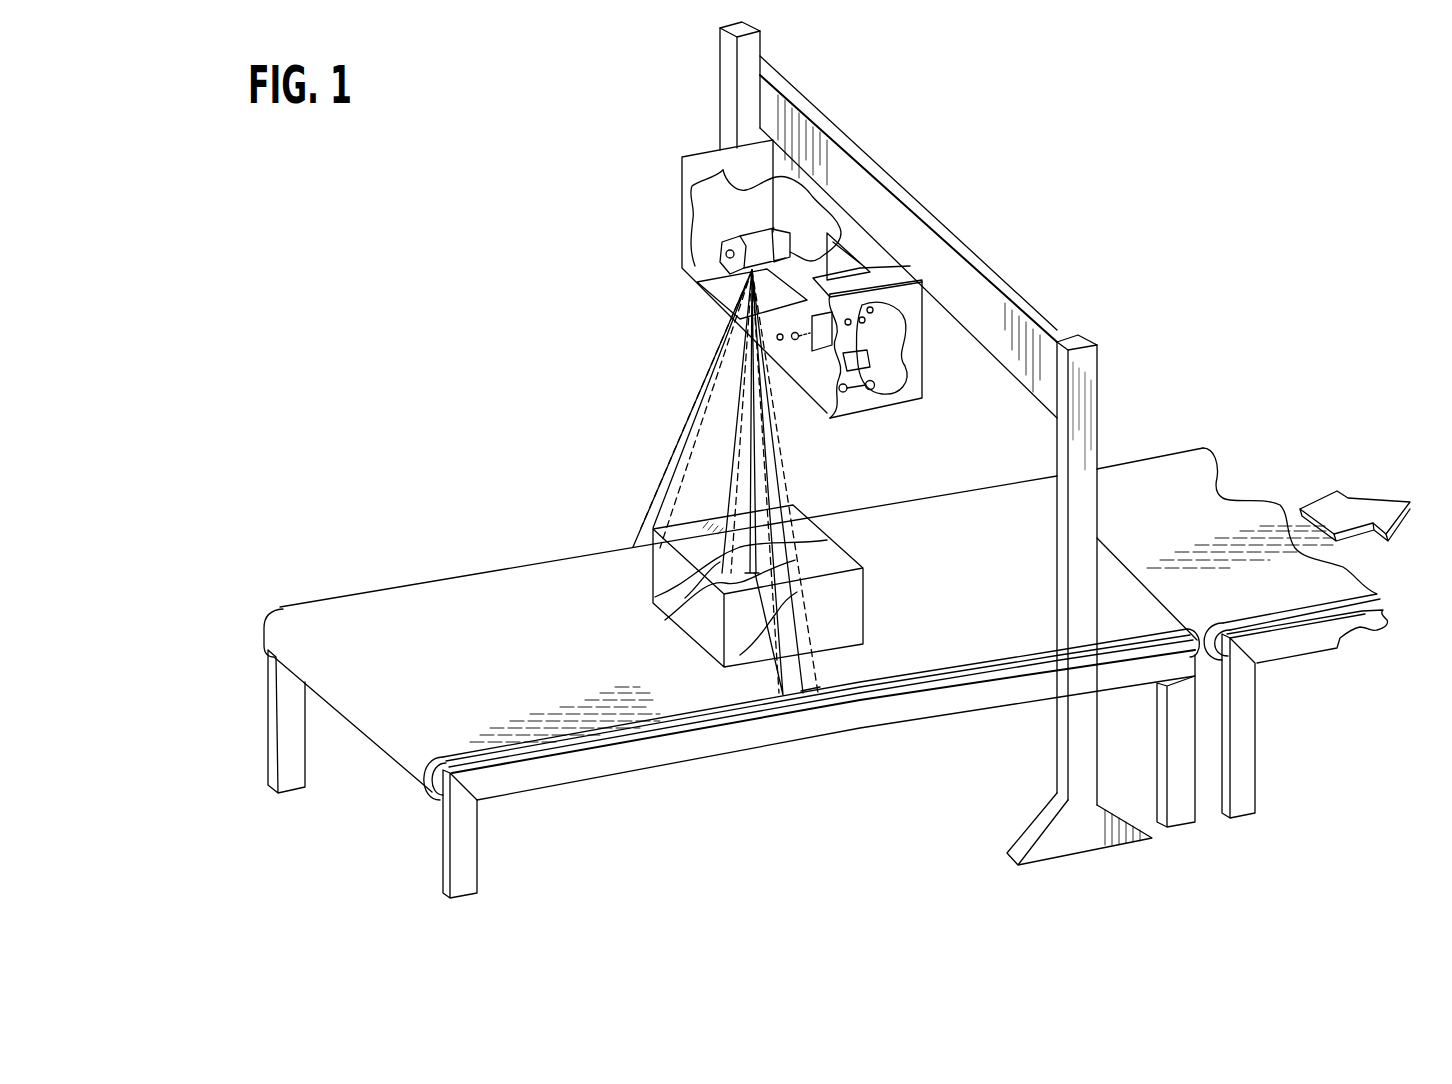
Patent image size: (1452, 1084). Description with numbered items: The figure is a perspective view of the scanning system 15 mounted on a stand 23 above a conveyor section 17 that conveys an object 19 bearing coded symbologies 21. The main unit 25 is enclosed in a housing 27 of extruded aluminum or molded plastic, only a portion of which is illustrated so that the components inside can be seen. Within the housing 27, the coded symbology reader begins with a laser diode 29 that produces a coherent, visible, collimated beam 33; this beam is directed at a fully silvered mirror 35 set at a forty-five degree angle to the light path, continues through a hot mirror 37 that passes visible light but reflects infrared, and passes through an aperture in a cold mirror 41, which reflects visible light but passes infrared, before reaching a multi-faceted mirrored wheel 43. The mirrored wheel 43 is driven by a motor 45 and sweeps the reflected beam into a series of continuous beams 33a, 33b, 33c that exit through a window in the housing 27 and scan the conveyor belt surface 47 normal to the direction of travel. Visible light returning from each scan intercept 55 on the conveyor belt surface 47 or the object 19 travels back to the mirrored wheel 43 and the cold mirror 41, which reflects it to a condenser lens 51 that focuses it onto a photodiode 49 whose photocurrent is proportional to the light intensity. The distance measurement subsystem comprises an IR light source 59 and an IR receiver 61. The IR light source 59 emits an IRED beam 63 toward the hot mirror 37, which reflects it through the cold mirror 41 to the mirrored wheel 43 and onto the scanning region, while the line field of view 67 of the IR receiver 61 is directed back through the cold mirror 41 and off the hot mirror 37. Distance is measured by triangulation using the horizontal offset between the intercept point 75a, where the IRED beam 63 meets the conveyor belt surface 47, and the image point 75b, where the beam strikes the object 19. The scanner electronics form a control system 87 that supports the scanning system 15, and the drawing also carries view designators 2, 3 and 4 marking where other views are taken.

The scanning system 15 is at (975, 107).
The conveyor section 17 is at (513, 780).
The object 19 is at (846, 610).
The coded symbologies 21 is at (690, 515).
The stand 23 is at (718, 82).
The main unit 25 is at (933, 368).
The housing 27 is at (917, 318).
The laser diode 29 is at (840, 396).
The collimated beam 33 is at (847, 393).
The continuous scanning beam 33a is at (787, 545).
The continuous scanning beam 33b is at (680, 620).
The continuous scanning beam 33c is at (698, 417).
The fully silvered mirror 35 is at (873, 389).
The hot mirror 37 is at (872, 352).
The cold mirror 41 is at (860, 357).
The multi-faceted mirrored wheel 43 is at (720, 253).
The motor 45 is at (768, 270).
The conveyor belt surface 47 is at (623, 712).
The photodiode 49 is at (767, 340).
The condenser lens 51 is at (722, 305).
The scan intercept 55 is at (808, 695).
The IR light source 59 is at (905, 300).
The IR receiver 61 is at (900, 290).
The IRED beam 63 is at (697, 380).
The line field of view 67 is at (815, 689).
The intercept point 75a is at (633, 547).
The image point 75b is at (723, 600).
The control system 87 is at (848, 256).
The section line 2- 2 is at (737, 222).
The section line 3- 3 is at (860, 147).
The section line 4- 4 is at (543, 633).